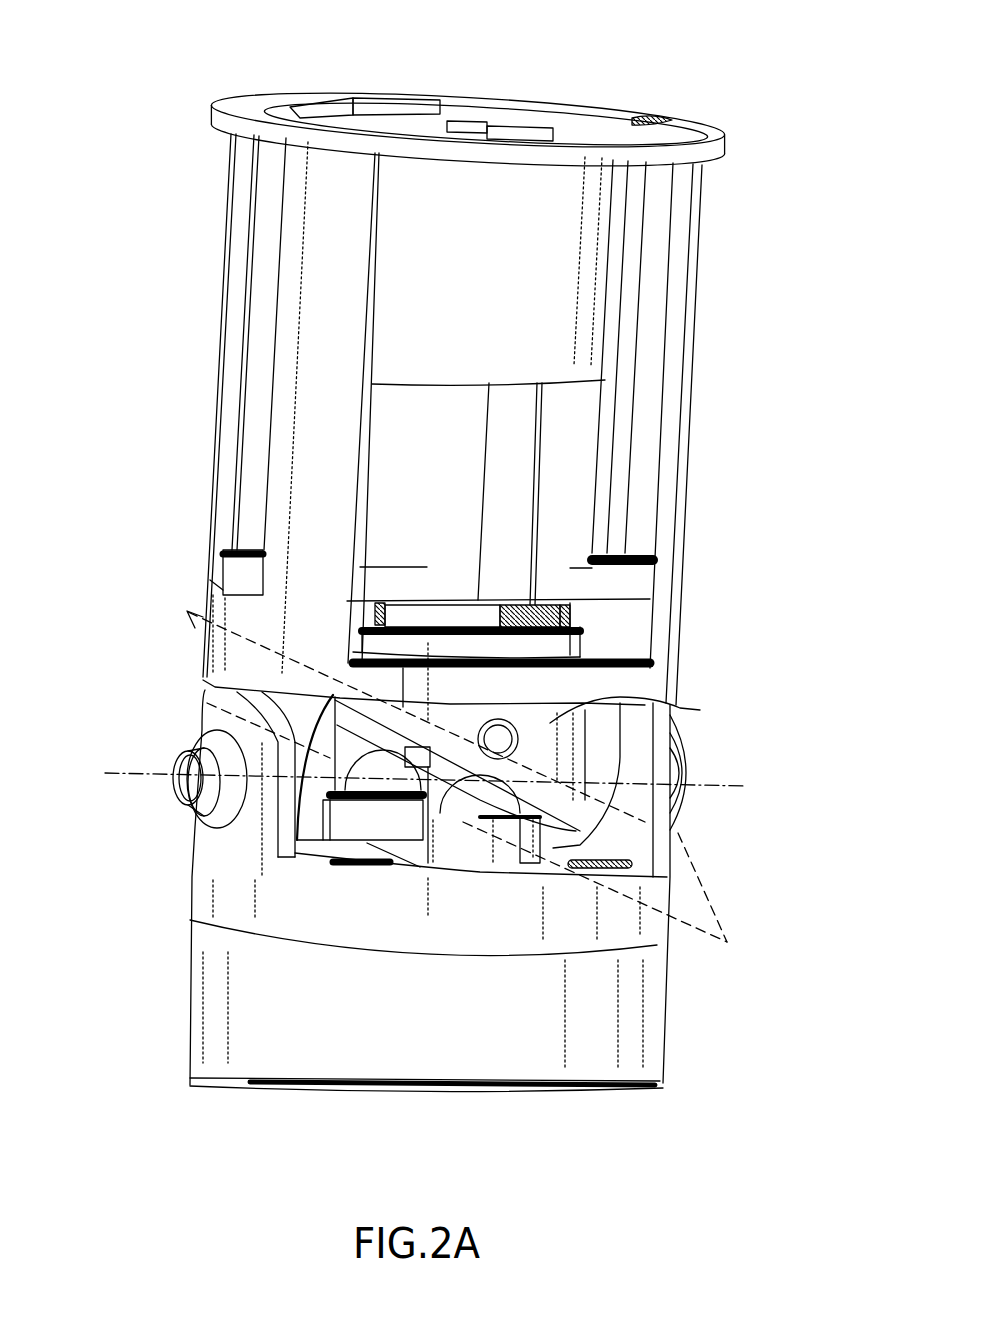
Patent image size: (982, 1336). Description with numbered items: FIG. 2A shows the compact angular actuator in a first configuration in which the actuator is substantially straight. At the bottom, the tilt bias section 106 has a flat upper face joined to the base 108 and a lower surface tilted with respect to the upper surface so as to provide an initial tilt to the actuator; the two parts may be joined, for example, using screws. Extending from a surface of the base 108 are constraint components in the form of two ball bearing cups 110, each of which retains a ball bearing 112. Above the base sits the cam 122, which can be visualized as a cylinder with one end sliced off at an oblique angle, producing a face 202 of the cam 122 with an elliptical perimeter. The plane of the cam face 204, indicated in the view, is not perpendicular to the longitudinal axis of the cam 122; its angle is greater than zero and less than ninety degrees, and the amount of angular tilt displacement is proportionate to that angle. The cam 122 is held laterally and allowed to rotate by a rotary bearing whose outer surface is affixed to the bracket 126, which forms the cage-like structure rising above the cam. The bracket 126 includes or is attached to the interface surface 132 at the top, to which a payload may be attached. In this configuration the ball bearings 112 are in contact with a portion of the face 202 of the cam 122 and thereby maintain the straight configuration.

The interface surface 132 is at (677, 132).
The bracket 126 is at (692, 402).
The plane of the cam face 204 is at (197, 633).
The cam 122 is at (680, 708).
The ball bearing 112 is at (500, 770).
The base 108 is at (623, 922).
The tilt bias section 106 is at (243, 1018).
The ball bearing cup 110 is at (450, 858).
The face of the cam 202 is at (540, 815).